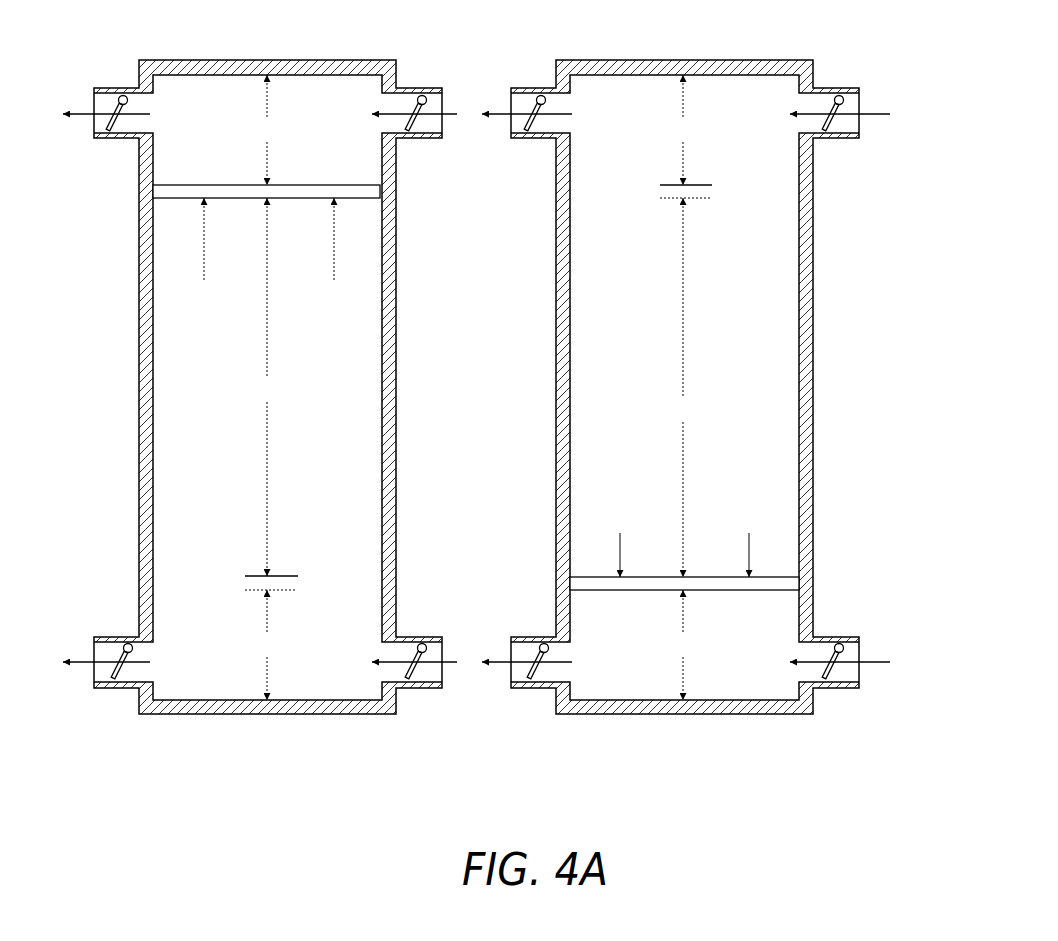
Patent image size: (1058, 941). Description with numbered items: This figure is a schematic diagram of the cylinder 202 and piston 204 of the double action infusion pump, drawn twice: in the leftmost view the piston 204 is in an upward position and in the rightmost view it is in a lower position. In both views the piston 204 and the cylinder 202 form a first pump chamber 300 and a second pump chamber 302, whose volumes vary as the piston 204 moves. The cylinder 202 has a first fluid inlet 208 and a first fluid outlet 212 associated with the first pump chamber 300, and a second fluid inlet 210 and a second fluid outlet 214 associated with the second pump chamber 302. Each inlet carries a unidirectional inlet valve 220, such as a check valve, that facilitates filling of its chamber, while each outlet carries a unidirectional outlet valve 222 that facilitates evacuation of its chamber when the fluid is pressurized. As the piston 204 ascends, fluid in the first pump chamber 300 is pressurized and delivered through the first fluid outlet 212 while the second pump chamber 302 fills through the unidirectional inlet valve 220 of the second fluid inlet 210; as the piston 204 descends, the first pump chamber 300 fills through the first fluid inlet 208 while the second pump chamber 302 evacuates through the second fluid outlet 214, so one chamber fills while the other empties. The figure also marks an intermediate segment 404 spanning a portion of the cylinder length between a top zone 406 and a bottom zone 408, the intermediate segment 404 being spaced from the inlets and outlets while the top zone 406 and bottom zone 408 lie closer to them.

The cylinder 202 is at (397, 268).
The piston 204 is at (296, 185).
The first fluid inlet 208 is at (415, 88).
The second fluid inlet 210 is at (408, 637).
The first fluid outlet 212 is at (108, 138).
The second fluid outlet 214 is at (118, 637).
The unidirectional inlet valve 220 is at (415, 680).
The unidirectional outlet valve 222 is at (113, 115).
The first pump chamber 300 is at (225, 92).
The second pump chamber 302 is at (243, 688).
The intermediate segment 404 is at (478, 387).
The top zone 406 is at (480, 130).
The bottom zone 408 is at (473, 645).